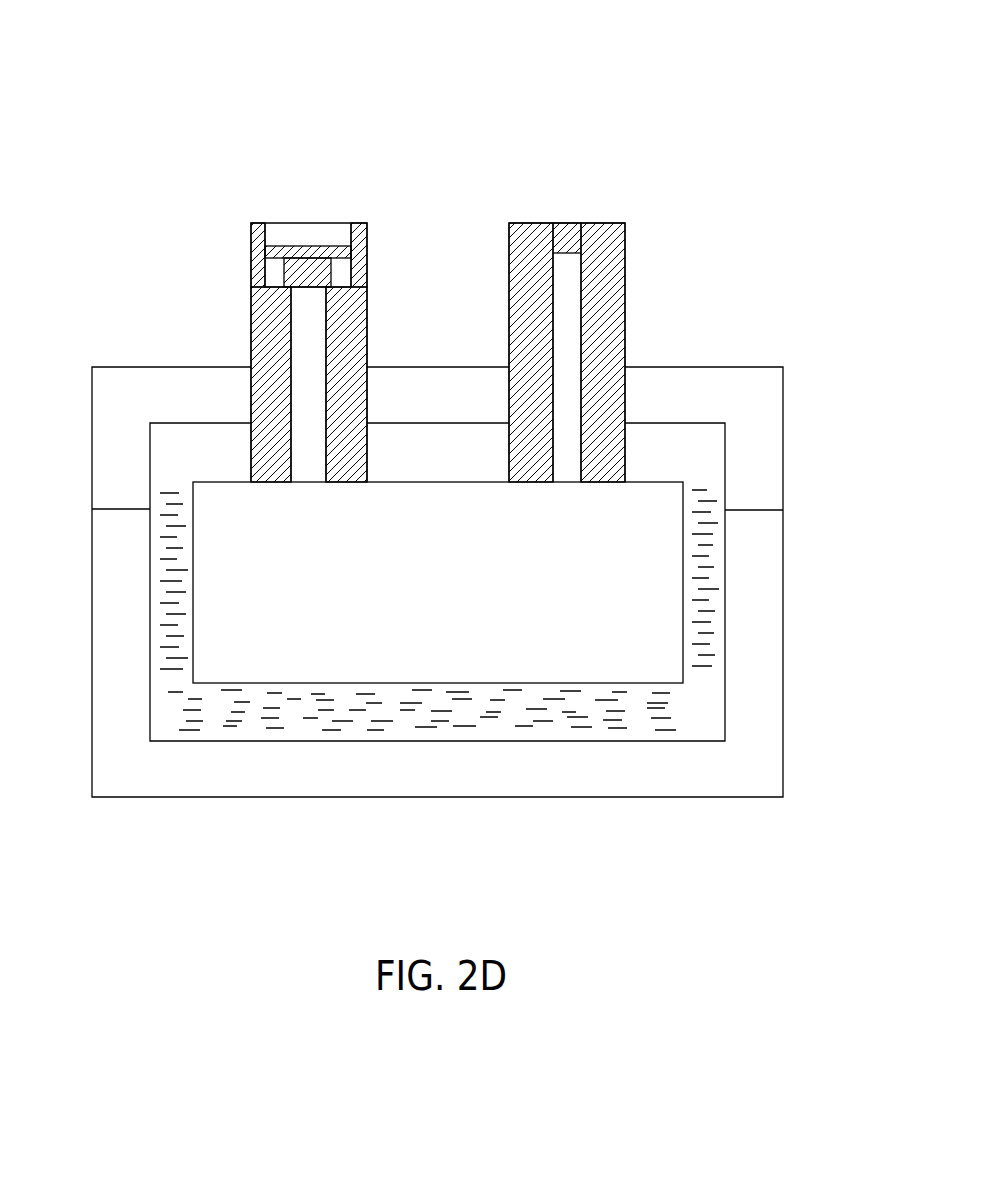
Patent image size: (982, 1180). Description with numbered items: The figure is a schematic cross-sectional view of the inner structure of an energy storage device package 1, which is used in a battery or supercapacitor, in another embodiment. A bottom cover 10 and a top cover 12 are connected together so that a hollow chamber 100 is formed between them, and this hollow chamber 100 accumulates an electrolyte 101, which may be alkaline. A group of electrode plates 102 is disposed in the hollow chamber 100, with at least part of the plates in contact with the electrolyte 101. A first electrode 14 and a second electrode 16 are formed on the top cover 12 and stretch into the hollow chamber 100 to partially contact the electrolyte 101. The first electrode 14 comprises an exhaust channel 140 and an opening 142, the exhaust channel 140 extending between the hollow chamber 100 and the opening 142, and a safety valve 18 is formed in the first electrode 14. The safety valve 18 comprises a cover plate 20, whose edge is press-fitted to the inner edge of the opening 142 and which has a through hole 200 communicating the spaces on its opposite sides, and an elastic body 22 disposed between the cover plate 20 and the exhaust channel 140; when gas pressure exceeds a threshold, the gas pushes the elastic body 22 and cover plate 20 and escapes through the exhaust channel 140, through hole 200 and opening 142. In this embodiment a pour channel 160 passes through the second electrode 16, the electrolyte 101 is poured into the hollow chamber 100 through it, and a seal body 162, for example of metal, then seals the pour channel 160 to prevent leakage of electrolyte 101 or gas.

The energy storage device package 1 is at (134, 39).
The bottom cover 10 is at (108, 625).
The top cover 12 is at (107, 438).
The first electrode 14 is at (367, 345).
The exhaust channel 140 is at (297, 352).
The opening 142 is at (268, 222).
The second electrode 16 is at (610, 223).
The pour channel 160 is at (572, 327).
The seal body 162 is at (567, 223).
The safety valve 18 is at (358, 209).
The cover plate 20 is at (327, 247).
The elastic body 22 is at (335, 281).
The through hole 200 is at (275, 247).
The hollow chamber 100 is at (345, 741).
The electrolyte 101 is at (710, 698).
The group of electrode plates 102 is at (653, 480).